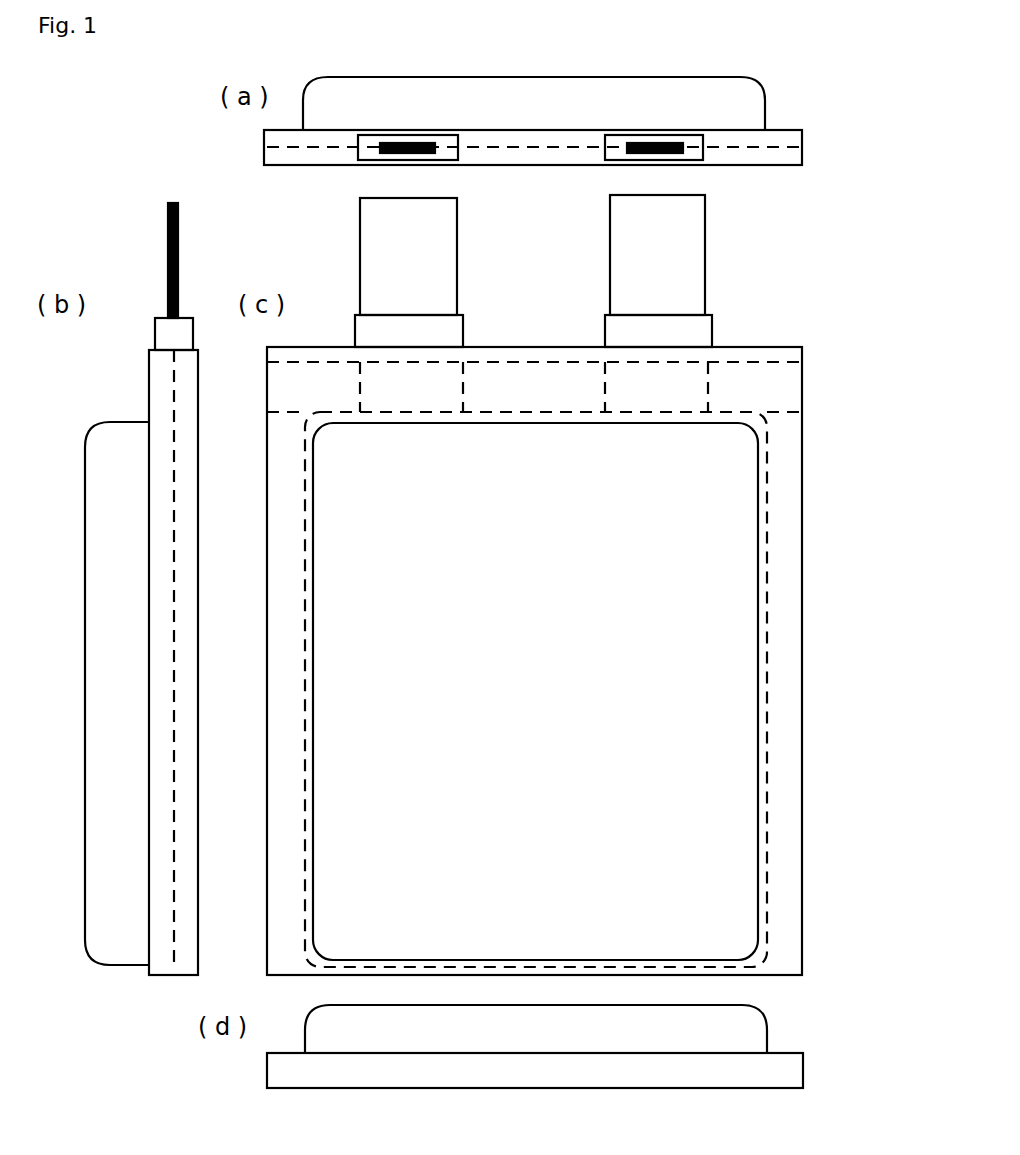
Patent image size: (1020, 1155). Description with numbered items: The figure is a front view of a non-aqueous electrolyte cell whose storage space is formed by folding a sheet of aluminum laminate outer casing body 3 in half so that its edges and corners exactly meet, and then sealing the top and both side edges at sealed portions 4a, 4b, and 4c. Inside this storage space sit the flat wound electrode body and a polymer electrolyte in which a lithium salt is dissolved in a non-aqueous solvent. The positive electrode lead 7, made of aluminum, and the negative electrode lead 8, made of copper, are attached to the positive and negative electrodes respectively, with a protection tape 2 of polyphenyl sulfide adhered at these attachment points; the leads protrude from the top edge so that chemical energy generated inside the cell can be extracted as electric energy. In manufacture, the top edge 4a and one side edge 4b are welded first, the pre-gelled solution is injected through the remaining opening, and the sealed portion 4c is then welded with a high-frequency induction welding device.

The protection tape 2 is at (603, 318).
The laminate outer casing body 3 is at (803, 618).
The top sealed portion 4a is at (513, 380).
The side sealed portion 4b is at (783, 815).
The side sealed portion 4c is at (288, 645).
The positive electrode lead 7 is at (360, 255).
The negative electrode lead 8 is at (705, 262).